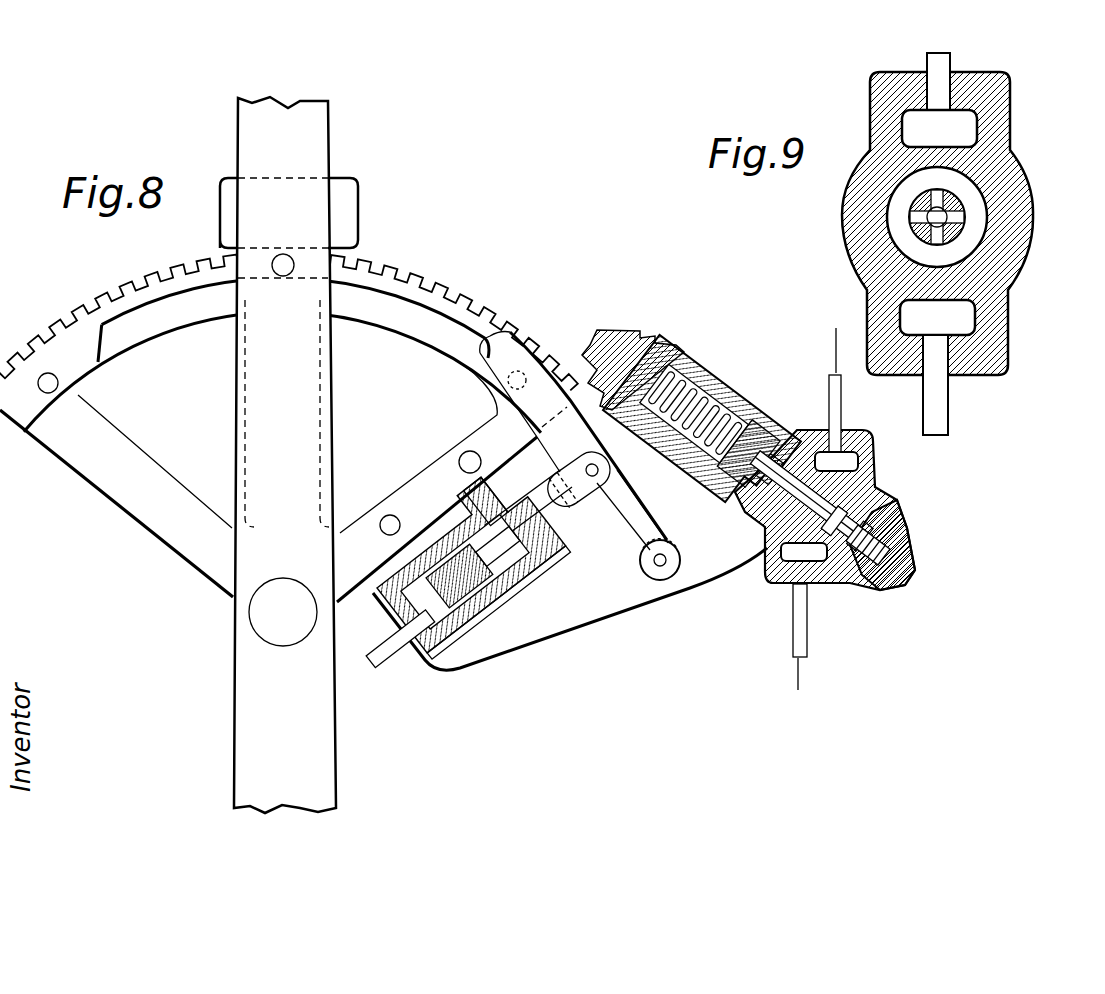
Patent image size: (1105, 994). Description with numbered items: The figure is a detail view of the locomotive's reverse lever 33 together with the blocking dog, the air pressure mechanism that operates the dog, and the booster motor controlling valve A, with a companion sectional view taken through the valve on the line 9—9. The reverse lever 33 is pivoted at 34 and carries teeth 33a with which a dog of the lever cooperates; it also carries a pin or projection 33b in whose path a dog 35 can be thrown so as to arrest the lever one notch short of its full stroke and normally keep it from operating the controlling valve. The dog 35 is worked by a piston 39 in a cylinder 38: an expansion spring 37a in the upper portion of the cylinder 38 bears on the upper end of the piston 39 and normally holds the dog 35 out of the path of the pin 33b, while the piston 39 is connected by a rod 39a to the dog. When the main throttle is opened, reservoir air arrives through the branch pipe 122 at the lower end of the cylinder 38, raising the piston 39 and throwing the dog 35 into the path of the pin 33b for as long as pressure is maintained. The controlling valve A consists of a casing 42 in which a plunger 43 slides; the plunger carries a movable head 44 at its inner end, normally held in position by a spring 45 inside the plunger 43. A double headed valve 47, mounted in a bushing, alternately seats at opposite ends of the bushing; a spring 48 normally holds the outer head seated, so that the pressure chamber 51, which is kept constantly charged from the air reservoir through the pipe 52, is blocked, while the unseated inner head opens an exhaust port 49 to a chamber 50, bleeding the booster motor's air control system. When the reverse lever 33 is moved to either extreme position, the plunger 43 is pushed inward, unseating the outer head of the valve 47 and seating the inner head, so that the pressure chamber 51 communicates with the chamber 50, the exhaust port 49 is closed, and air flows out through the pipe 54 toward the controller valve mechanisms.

In FIG. 8, the reverse lever 33 is at (322, 132).
In FIG. 8, the teeth 33a is at (56, 326).
In FIG. 8, the pin or projection 33b is at (280, 276).
In FIG. 8, the pivot 34 is at (258, 618).
In FIG. 8, the dog 35 is at (513, 342).
In FIG. 8, the expansion spring 37a is at (523, 590).
In FIG. 8, the cylinder 38 is at (430, 660).
In FIG. 8, the piston 39 is at (487, 623).
In FIG. 8, the rod 39a is at (555, 512).
In FIG. 8, the branch pipe 122 is at (377, 663).
In FIG. 8, the plunger 43 is at (612, 332).
In FIG. 8, the booster motor controlling valve A is at (685, 340).
In FIG. 8, the spring 45 is at (690, 374).
In FIG. 8, the movable head 44 is at (747, 414).
In FIG. 8, the exhaust port 49 is at (748, 513).
In FIG. 8, the casing 42 is at (843, 588).
In FIG. 9, the casing 42 is at (1023, 190).
In FIG. 8, the spring 48 is at (905, 544).
In FIG. 8, the double headed valve 47 is at (815, 497).
In FIG. 9, the double headed valve 47 is at (910, 210).
In FIG. 8, the pipe 54 is at (823, 390).
In FIG. 9, the pipe 54 is at (933, 61).
In FIG. 8, the chamber 50 is at (838, 460).
In FIG. 9, the chamber 50 is at (963, 128).
In FIG. 8, the pressure chamber 51 is at (788, 553).
In FIG. 9, the pressure chamber 51 is at (960, 317).
In FIG. 8, the pipe 52 is at (788, 637).
In FIG. 9, the pipe 52 is at (940, 412).
In FIG. 8, the section line 9— 9 is at (815, 513).